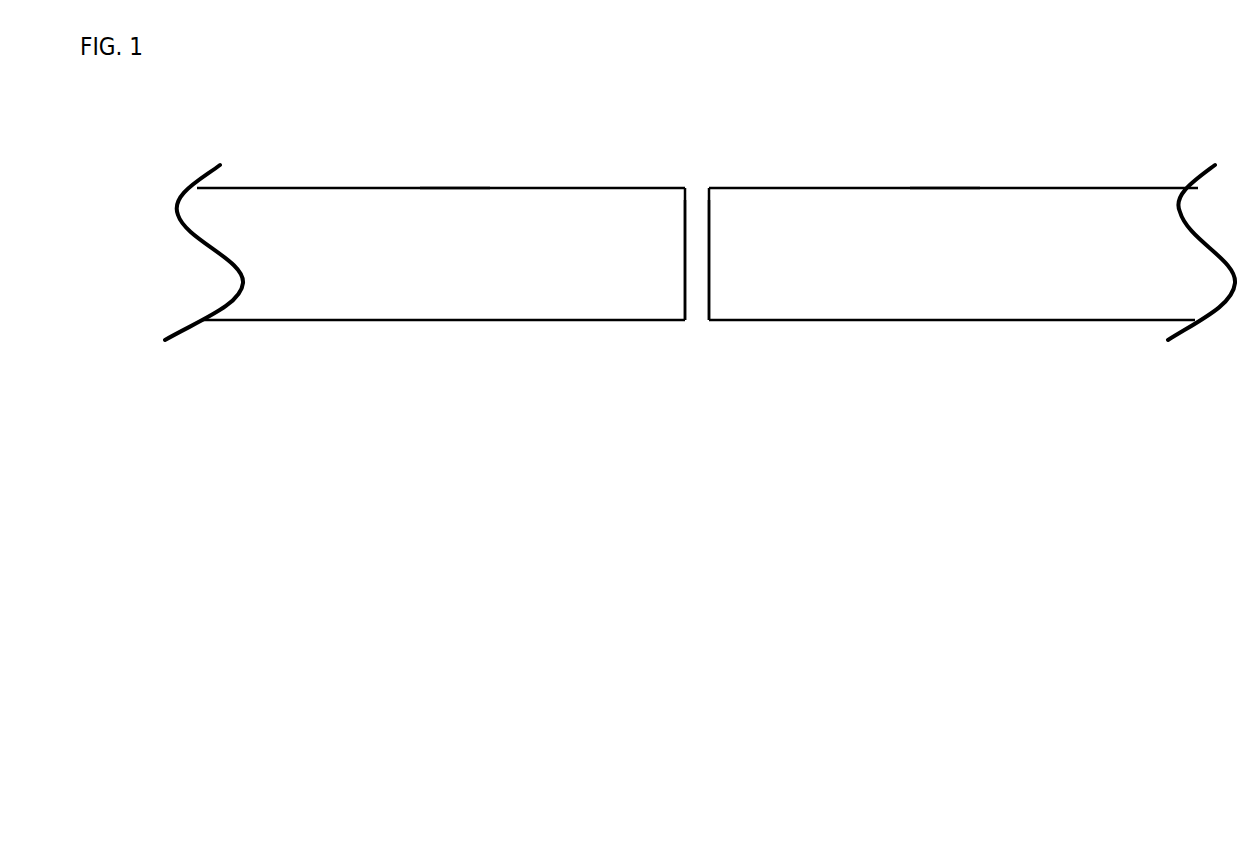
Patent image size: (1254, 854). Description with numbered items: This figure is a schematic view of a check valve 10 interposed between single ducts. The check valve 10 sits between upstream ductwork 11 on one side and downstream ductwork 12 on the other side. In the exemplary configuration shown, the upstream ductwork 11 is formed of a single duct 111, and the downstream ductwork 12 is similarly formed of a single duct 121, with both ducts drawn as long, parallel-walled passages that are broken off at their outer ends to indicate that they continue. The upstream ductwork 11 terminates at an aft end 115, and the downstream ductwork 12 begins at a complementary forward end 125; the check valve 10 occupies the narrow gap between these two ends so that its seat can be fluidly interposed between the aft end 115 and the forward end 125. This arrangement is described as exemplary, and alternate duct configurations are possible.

The check valve 10 is at (698, 320).
The upstream ductwork 11 is at (962, 318).
The downstream ductwork 12 is at (402, 318).
The single duct 111 is at (942, 188).
The aft end 115 is at (722, 291).
The single duct 121 is at (453, 188).
The forward end 125 is at (674, 272).